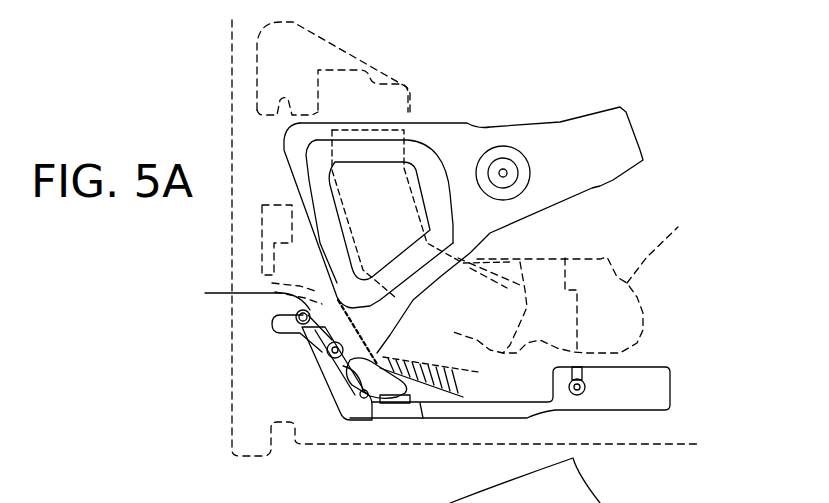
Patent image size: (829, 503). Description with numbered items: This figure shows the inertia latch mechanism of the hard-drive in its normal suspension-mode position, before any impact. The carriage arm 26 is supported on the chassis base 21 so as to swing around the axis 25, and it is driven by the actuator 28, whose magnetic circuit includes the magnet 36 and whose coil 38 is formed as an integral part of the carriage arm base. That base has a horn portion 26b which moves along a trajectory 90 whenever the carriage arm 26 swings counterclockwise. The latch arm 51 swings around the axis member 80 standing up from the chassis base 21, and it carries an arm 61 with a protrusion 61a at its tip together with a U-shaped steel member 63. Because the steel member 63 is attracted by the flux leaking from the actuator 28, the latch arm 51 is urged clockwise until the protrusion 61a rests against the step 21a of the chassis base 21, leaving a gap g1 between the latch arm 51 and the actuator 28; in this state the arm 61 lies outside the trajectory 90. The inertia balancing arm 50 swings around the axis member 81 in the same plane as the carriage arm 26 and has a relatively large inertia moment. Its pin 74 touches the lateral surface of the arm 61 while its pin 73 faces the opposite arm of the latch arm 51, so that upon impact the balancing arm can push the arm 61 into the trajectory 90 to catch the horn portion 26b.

The chassis base 21 is at (228, 222).
The step 21a is at (424, 405).
The axis 25 is at (503, 170).
The carriage arm 26 is at (558, 122).
The horn portion 26b is at (378, 352).
The actuator 28 is at (668, 248).
The magnet 36 is at (520, 260).
The coil 38 is at (420, 152).
The inertia balancing arm 50 is at (518, 410).
The latch arm 51 is at (320, 375).
The arm 61 is at (372, 410).
The protrusion 61a is at (399, 403).
The steel member 63 is at (298, 348).
The pin 73 is at (296, 318).
The pin 74 is at (363, 405).
The axis member 80 is at (327, 358).
The axis member 81 is at (583, 394).
The trajectory 90 is at (463, 383).
The gap g1 is at (242, 292).